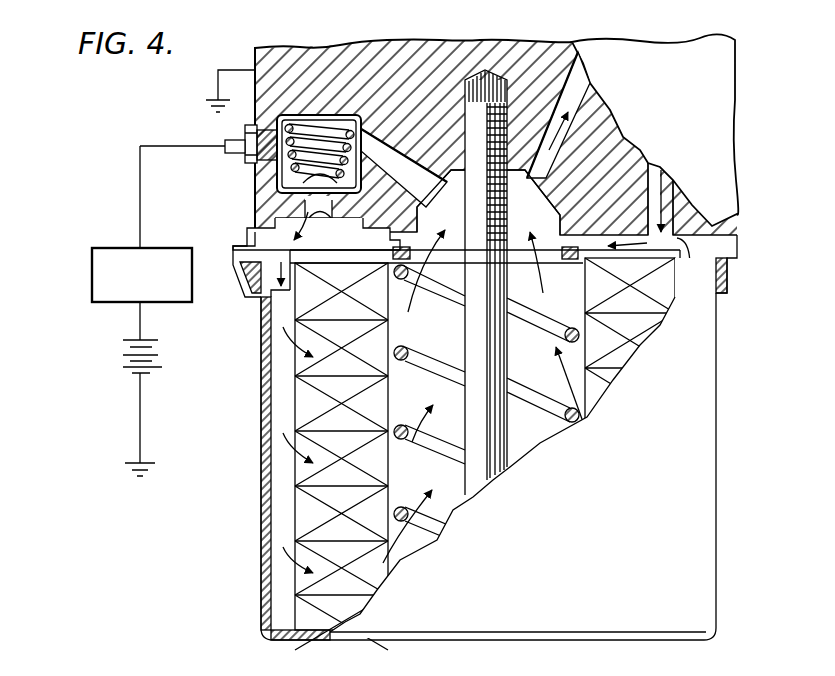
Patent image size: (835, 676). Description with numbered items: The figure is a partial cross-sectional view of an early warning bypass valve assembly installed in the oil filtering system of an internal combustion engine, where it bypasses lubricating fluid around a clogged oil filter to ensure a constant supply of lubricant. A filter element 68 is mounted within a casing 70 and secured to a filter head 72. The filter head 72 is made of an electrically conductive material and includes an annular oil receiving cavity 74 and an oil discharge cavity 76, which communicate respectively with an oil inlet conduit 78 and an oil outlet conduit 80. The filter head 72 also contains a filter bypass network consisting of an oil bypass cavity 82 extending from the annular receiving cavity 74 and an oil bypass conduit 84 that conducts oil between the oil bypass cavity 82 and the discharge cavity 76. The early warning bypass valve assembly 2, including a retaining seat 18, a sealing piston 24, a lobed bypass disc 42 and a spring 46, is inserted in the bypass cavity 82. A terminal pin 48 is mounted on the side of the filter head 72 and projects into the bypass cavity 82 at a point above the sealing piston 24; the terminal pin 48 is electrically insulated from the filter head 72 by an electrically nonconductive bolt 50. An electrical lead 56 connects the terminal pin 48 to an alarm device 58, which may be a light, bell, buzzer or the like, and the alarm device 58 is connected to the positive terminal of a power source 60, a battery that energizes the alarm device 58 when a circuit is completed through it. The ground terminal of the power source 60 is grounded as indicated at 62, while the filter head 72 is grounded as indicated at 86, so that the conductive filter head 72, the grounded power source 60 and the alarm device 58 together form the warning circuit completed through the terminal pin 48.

The early warning bypass valve assembly 2 is at (128, 128).
The retaining seat 18 is at (262, 226).
The sealing piston 24 is at (420, 212).
The lobed bypass disc 42 is at (265, 182).
The spring 46 is at (321, 126).
The terminal pin 48 is at (234, 158).
The bolt 50 is at (243, 135).
The electrical lead 56 is at (140, 196).
The alarm device 58 is at (92, 254).
The power source 60 is at (120, 359).
The ground 62 is at (126, 473).
The filter element 68 is at (295, 530).
The casing 70 is at (716, 456).
The filter head 72 is at (554, 78).
The annular oil receiving cavity 74 is at (242, 252).
The oil discharge cavity 76 is at (555, 200).
The oil inlet conduit 78 is at (661, 165).
The oil outlet conduit 80 is at (590, 88).
The oil bypass cavity 82 is at (358, 127).
The oil bypass conduit 84 is at (408, 130).
The ground 86 is at (198, 88).